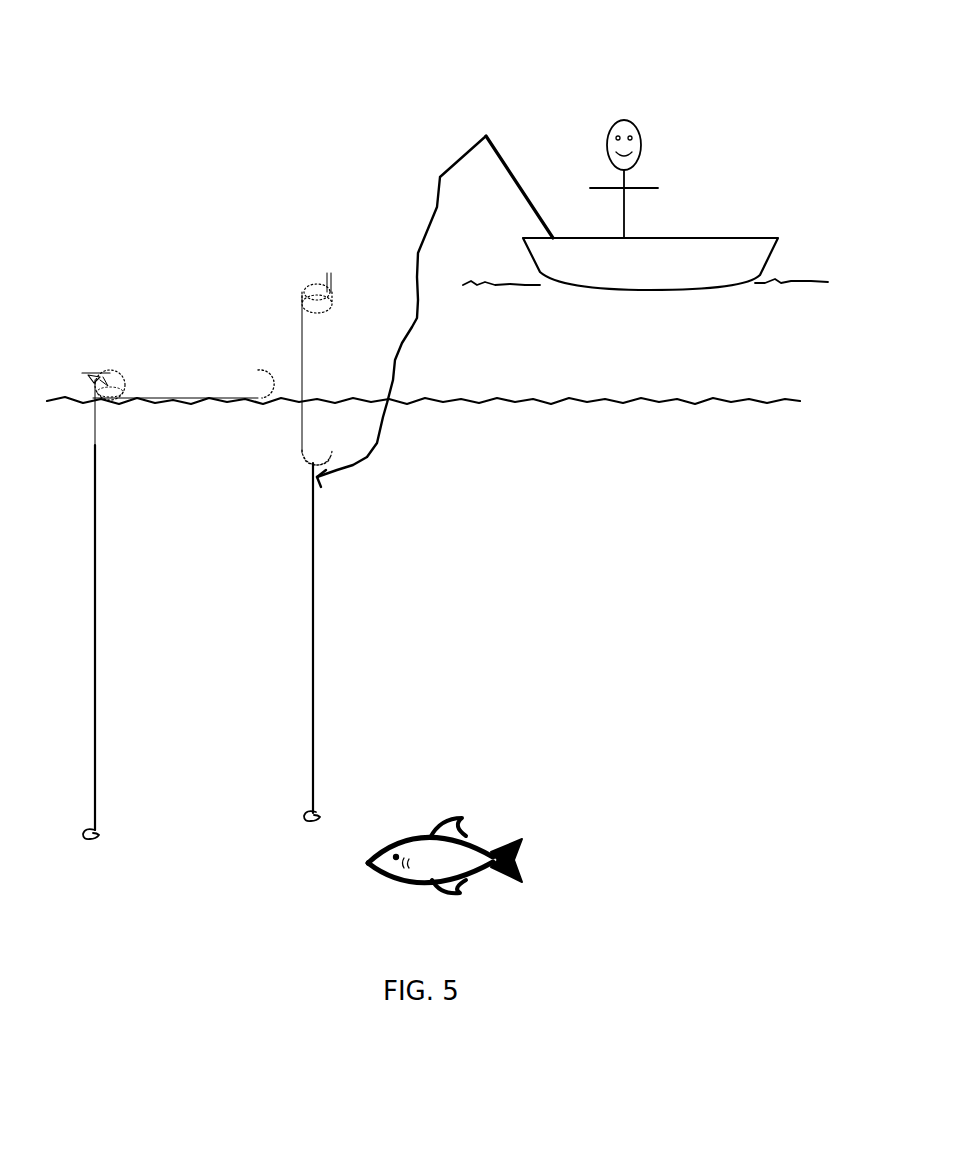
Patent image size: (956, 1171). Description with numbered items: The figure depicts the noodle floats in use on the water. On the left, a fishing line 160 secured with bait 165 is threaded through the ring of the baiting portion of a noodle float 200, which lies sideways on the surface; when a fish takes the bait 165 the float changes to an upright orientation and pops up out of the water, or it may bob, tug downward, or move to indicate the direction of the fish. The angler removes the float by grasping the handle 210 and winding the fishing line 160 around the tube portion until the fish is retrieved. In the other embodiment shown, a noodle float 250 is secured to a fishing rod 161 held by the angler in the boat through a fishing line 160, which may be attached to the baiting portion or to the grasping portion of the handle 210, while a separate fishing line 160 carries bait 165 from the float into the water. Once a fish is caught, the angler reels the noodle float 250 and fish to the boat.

The fishing line 160 is at (438, 172).
The fishing rod 161 is at (505, 135).
The bait 165 is at (103, 833).
The noodle float 200 is at (132, 373).
The handle 210 is at (318, 292).
The noodle float 250 is at (302, 355).